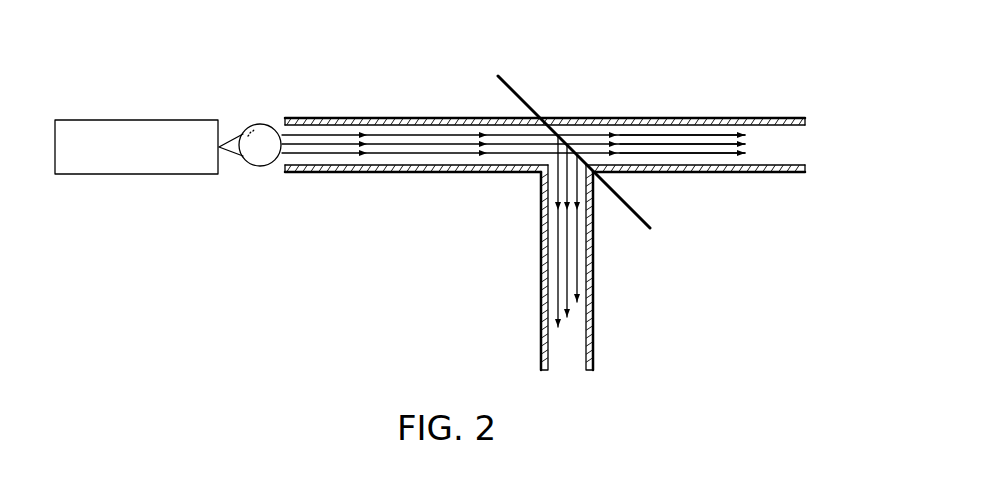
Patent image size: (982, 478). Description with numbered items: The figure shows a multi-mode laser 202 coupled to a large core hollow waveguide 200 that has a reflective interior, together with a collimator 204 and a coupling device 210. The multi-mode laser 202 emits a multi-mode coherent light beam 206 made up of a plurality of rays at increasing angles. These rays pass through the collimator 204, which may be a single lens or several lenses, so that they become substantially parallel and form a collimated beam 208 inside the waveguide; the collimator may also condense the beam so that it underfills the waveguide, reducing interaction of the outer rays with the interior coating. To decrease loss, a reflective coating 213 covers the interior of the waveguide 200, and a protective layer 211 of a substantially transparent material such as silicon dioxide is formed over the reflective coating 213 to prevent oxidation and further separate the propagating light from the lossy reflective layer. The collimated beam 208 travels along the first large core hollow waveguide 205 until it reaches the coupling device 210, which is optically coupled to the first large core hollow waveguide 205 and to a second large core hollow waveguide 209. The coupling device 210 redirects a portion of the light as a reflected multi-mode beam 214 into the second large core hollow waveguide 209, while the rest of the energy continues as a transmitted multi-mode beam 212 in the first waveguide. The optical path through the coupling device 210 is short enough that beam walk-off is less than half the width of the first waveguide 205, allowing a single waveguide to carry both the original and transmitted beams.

The large core hollow waveguide 200 is at (337, 76).
The multi-mode laser 202 is at (137, 174).
The collimator 204 is at (260, 167).
The multi-mode coherent light beam 206 is at (223, 153).
The first large core hollow waveguide 205 is at (545, 161).
The collimated beam 208 is at (415, 138).
The second large core hollow waveguide 209 is at (532, 298).
The coupling device 210 is at (513, 88).
The protective layer 211 is at (357, 125).
The transmitted multi-mode beam 212 is at (702, 137).
The reflective coating 213 is at (413, 125).
The reflected multi-mode beam 214 is at (577, 275).